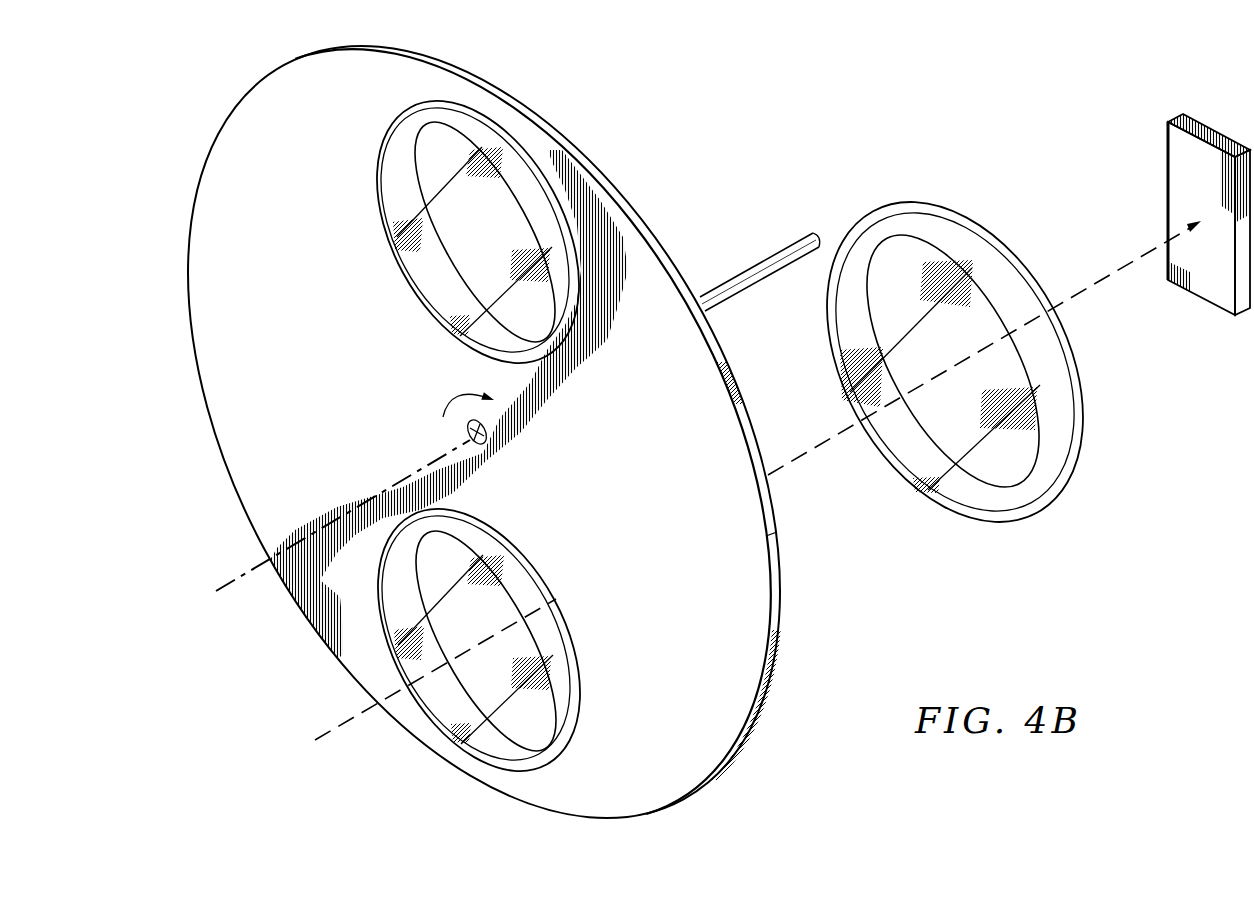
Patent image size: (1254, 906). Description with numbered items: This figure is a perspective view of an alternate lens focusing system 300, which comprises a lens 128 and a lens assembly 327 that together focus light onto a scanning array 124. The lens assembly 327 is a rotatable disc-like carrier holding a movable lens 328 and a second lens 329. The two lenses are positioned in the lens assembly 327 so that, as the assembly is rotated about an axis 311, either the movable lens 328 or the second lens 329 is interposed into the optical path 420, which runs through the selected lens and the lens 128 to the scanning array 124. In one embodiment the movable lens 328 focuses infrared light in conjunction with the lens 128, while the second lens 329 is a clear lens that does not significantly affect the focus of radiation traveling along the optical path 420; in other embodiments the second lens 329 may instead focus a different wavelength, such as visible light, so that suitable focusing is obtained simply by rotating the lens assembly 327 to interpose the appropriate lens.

The lens focusing system 300 is at (658, 453).
The lens assembly 327 is at (487, 90).
The second lens 329 is at (396, 288).
The movable lens 328 is at (596, 706).
The axis 311 is at (238, 578).
The optical path 420 is at (343, 720).
The lens 128 is at (910, 205).
The scanning array 124 is at (1207, 138).